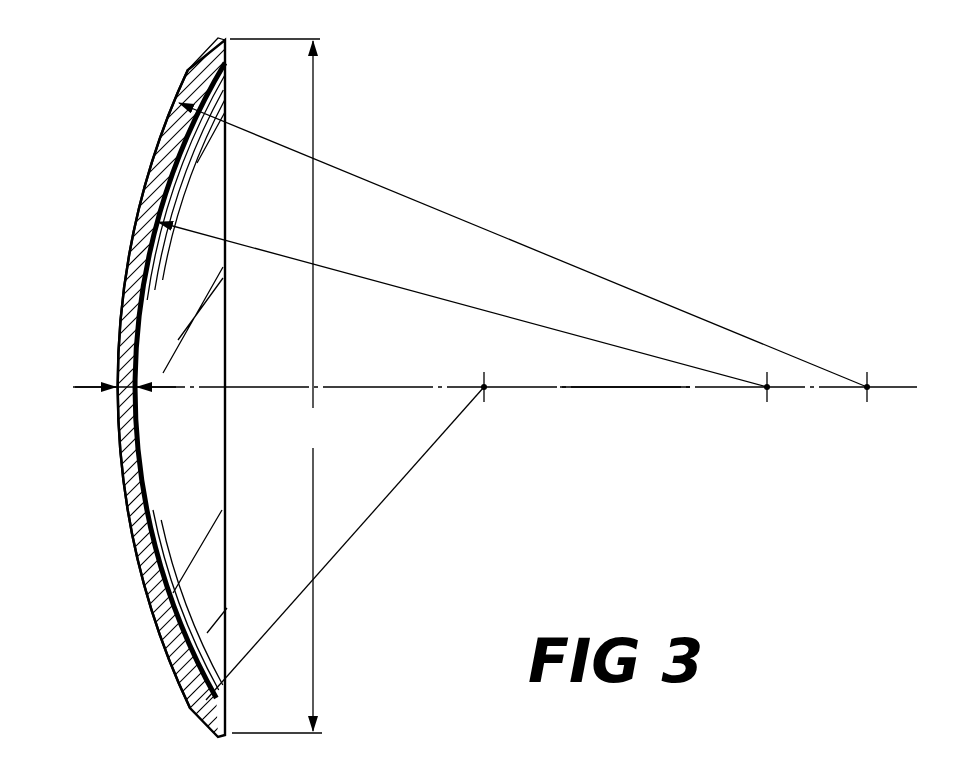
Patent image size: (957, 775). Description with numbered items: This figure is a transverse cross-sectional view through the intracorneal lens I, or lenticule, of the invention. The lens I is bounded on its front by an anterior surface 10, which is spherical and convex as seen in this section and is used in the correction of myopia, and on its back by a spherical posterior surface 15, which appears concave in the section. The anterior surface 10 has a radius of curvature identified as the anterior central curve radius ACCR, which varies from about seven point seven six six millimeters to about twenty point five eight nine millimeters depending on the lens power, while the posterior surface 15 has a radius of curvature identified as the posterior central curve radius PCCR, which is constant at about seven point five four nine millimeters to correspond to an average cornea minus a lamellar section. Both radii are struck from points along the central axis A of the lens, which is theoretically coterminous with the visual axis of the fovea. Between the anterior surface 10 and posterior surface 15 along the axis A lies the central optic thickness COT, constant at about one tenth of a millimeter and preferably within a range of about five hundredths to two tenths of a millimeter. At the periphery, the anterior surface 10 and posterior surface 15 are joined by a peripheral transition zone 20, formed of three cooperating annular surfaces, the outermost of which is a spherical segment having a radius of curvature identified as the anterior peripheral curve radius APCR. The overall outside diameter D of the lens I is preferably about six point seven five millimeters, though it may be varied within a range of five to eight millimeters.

The anterior surface 10 is at (123, 300).
The posterior surface 15 is at (148, 455).
The peripheral transition zone 20 is at (191, 58).
The intracorneal lens I is at (152, 590).
The central optic thickness COT is at (118, 367).
The outside diameter D is at (276, 386).
The anterior central curve radius ACCR is at (535, 249).
The posterior central curve radius PCCR is at (472, 308).
The anterior peripheral curve radius APCR is at (365, 520).
The central axis A is at (567, 390).